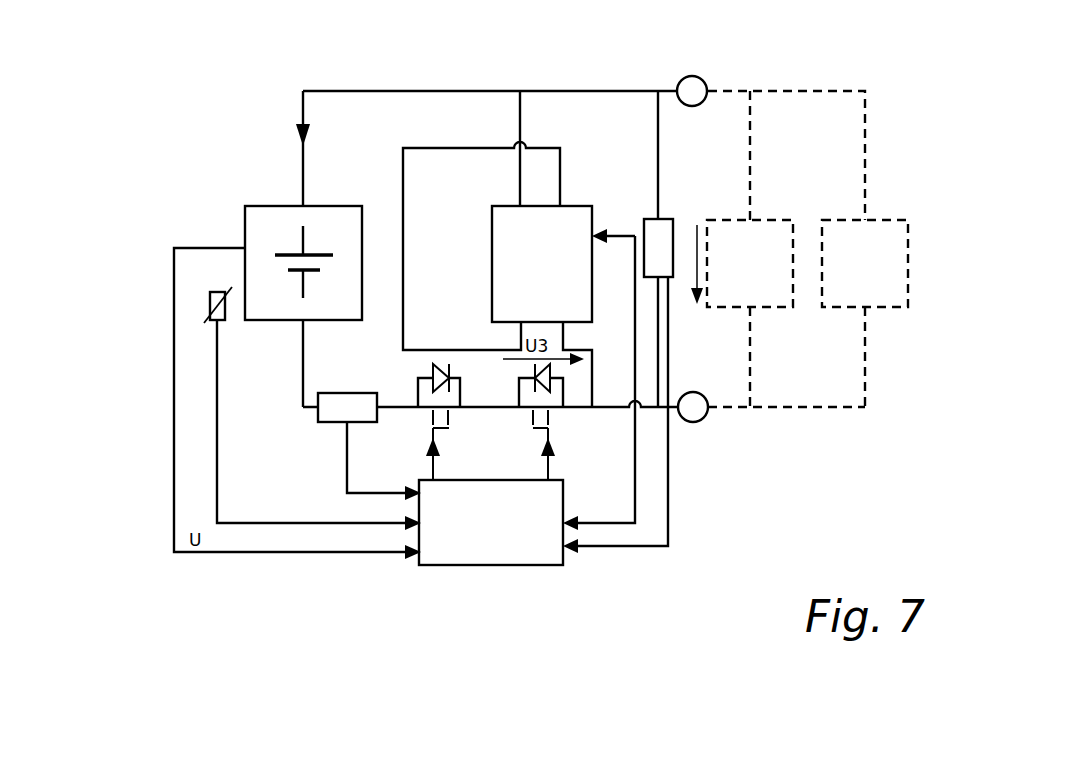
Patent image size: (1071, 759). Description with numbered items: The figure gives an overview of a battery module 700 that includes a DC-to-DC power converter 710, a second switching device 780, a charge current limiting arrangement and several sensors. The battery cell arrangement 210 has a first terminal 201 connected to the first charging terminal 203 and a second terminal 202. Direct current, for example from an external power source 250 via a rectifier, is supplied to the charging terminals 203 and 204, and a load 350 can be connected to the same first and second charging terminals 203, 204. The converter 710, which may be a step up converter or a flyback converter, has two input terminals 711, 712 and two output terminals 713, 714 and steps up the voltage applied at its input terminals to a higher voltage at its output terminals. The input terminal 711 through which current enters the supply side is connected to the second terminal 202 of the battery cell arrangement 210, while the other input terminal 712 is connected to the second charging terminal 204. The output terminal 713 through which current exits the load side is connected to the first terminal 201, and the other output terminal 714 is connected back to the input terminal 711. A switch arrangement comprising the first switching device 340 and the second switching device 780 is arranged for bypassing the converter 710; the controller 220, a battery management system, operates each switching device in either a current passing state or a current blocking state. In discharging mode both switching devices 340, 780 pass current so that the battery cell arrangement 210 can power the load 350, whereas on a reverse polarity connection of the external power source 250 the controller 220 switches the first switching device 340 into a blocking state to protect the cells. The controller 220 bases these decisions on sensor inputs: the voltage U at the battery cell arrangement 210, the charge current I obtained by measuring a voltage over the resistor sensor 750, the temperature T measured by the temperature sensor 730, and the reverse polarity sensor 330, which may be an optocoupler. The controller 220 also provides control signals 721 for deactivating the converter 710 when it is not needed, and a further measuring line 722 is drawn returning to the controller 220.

The battery module 700 is at (121, 628).
The first terminal of the battery cell arrangement 201 is at (303, 206).
The second terminal of the battery cell arrangement 202 is at (303, 320).
The first charging terminal 203 is at (698, 76).
The second charging terminal 204 is at (694, 392).
The battery cell arrangement 210 is at (245, 232).
The controller (BMS) 220 is at (447, 565).
The external power source 250 is at (765, 307).
The sensor 330 is at (673, 217).
The first switching device 340 is at (462, 422).
The load 350 is at (880, 307).
The DC-to-DC power converter 710 is at (490, 222).
The input terminal of the converter 711 is at (518, 317).
The input terminal of the converter 712 is at (592, 300).
The output terminal of the converter 713 is at (513, 205).
The output terminal of the converter 714 is at (557, 205).
The control signals 721 is at (603, 523).
The second measuring line 722 is at (658, 547).
The temperature sensor 730 is at (210, 312).
The sensor including a resistance 750 is at (325, 422).
The second switching device 780 is at (562, 422).